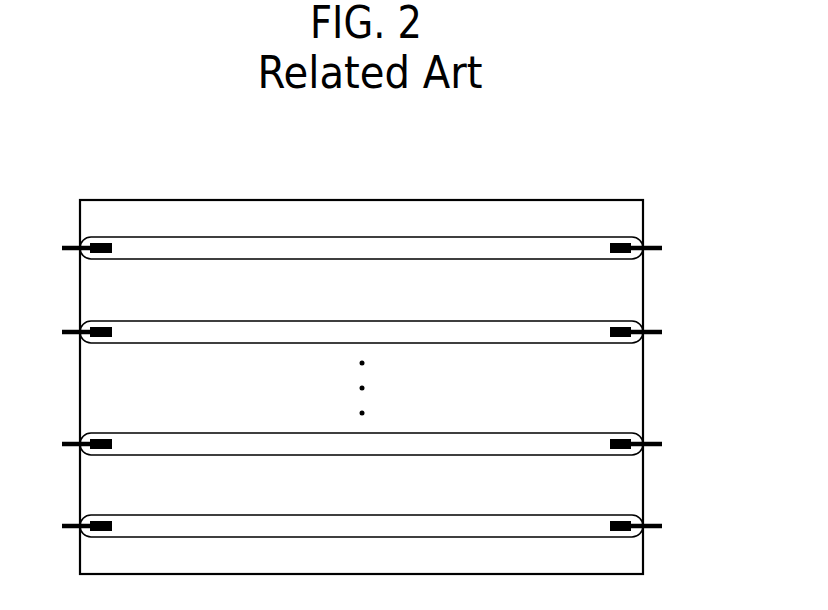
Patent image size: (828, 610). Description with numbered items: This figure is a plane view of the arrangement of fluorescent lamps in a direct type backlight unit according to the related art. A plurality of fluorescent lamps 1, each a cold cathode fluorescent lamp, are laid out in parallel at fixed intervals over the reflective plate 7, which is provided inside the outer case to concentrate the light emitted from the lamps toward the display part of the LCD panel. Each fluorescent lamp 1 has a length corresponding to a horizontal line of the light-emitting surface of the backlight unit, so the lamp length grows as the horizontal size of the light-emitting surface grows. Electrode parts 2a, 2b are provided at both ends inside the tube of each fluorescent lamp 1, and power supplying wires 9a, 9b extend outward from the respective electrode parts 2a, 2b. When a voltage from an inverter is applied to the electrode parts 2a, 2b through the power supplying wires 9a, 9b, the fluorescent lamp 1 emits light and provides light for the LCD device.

The fluorescent lamp 1 is at (363, 227).
The electrode part 2a is at (101, 258).
The electrode part 2b is at (624, 258).
The reflective plate 7 is at (630, 389).
The power supplying wire 9a is at (72, 247).
The power supplying wire 9b is at (655, 248).